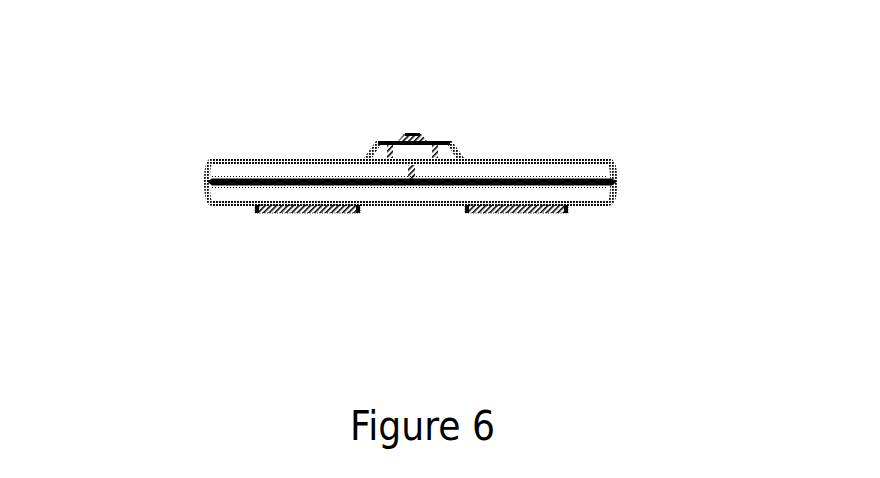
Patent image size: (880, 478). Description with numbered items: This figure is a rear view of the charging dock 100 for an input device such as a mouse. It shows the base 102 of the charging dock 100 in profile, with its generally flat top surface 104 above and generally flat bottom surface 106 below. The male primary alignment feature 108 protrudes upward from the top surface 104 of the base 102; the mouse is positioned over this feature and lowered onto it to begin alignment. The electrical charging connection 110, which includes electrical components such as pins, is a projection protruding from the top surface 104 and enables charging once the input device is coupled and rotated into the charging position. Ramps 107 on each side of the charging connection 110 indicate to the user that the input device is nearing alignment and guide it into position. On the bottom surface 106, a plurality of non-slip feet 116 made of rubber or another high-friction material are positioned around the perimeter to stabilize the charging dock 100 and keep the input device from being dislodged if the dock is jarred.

The charging dock 100 is at (203, 74).
The base 102 is at (608, 168).
The top surface 104 is at (253, 155).
The bottom surface 106 is at (228, 205).
The ramps 107 is at (365, 145).
The male primary alignment feature 108 is at (410, 130).
The charging connection 110 is at (427, 137).
The non-slip feet 116 is at (518, 205).